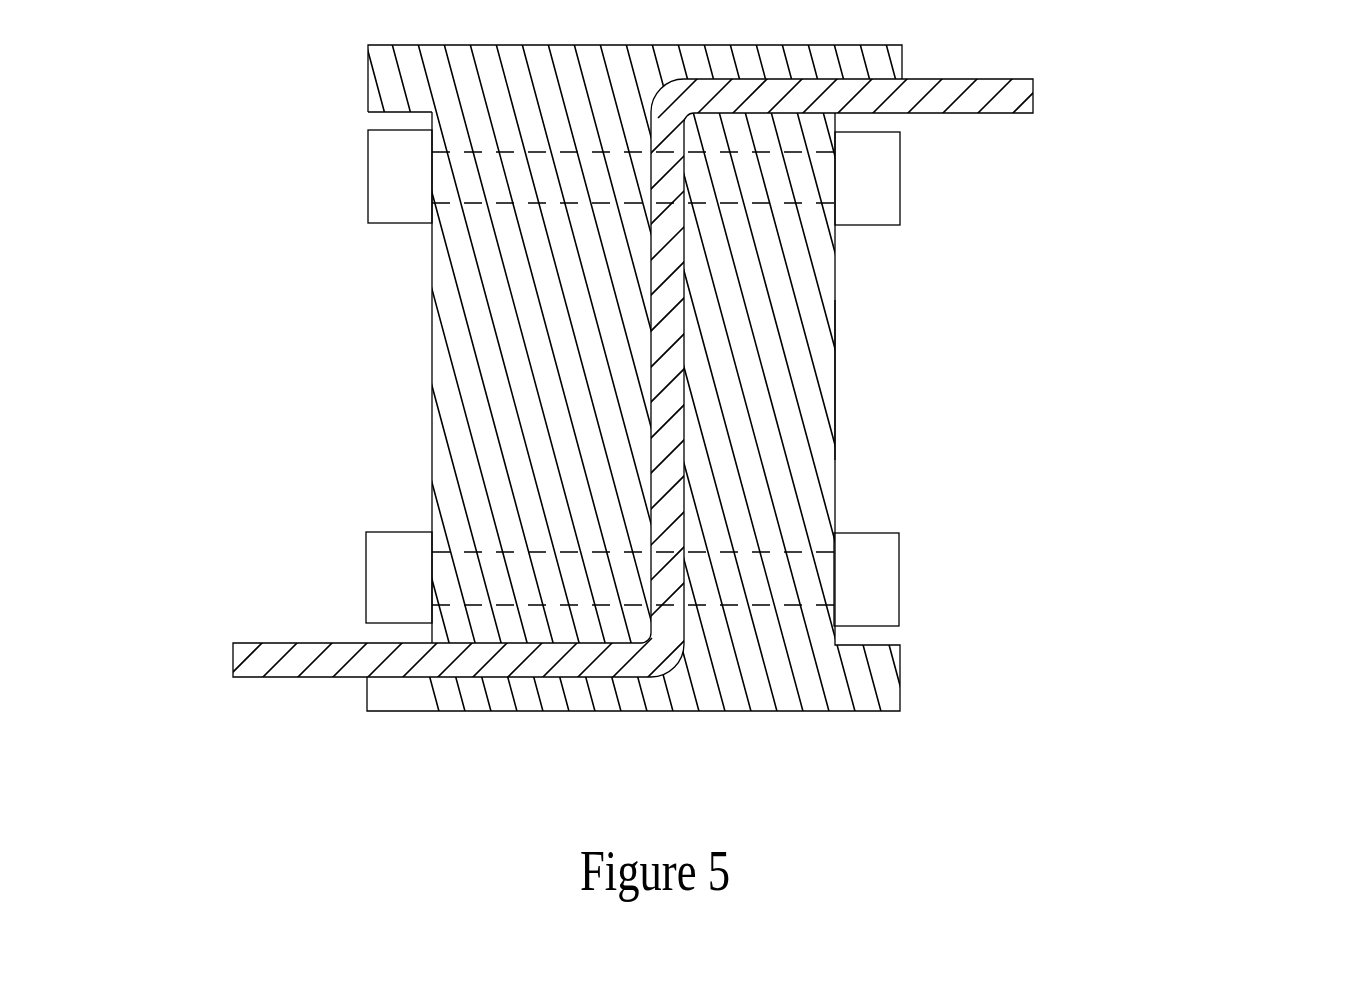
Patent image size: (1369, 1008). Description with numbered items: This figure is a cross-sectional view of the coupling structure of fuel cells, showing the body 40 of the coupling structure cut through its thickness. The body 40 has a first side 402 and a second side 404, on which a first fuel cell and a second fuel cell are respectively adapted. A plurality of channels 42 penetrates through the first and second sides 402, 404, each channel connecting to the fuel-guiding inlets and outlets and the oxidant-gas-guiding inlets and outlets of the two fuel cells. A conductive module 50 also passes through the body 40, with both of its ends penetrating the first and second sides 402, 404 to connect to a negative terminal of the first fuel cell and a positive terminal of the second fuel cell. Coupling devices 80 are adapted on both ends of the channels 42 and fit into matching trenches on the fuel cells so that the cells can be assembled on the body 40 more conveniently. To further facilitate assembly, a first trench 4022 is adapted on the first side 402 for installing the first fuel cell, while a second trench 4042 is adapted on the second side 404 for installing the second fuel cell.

The body 40 is at (725, 377).
The first side 402 is at (715, 411).
The first trench 4022 is at (912, 380).
The second side 404 is at (567, 345).
The second trench 4042 is at (433, 395).
The channels 42 is at (550, 203).
The conductive module 50 is at (258, 598).
The coupling device 80 is at (397, 177).